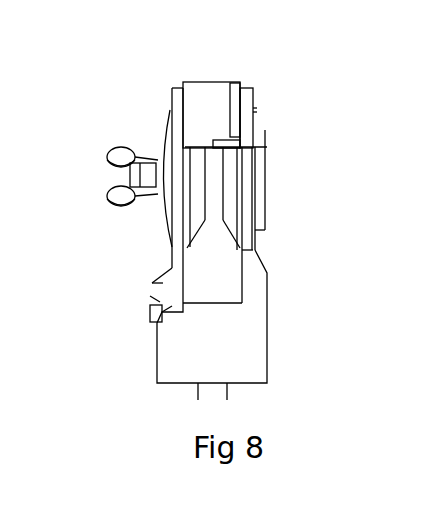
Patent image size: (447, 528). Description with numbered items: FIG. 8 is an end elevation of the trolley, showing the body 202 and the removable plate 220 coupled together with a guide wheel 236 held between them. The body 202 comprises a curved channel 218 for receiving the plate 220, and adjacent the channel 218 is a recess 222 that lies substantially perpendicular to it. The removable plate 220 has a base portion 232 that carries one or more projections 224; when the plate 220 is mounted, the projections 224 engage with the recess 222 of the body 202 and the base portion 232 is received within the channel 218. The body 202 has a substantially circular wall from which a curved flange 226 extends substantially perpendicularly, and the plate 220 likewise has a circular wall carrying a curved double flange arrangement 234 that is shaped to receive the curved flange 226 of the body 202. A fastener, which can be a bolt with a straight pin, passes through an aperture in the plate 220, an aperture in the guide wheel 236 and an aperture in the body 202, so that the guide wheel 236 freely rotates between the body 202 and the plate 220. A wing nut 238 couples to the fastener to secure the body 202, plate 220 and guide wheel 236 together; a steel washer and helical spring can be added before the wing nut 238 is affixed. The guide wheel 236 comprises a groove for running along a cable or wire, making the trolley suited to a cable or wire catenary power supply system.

The body 202 is at (248, 350).
The channel 218 is at (170, 315).
The removable plate 220 is at (170, 112).
The recess 222 is at (150, 308).
The projections 224 is at (155, 305).
The curved flange 226 is at (237, 143).
The base portion 232 is at (150, 285).
The double flange arrangement 234 is at (207, 92).
The guide wheel 236 is at (215, 210).
The wing nut 238 is at (120, 197).